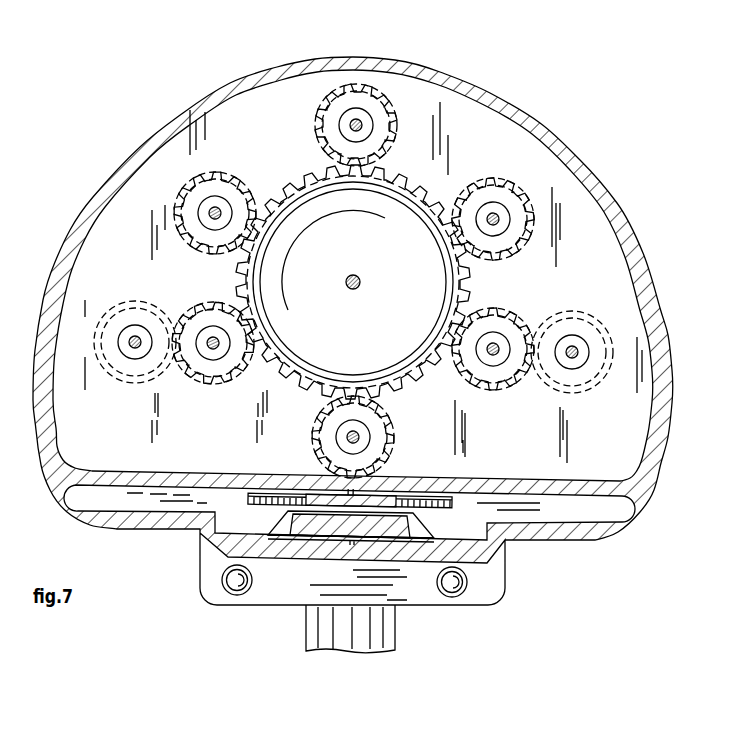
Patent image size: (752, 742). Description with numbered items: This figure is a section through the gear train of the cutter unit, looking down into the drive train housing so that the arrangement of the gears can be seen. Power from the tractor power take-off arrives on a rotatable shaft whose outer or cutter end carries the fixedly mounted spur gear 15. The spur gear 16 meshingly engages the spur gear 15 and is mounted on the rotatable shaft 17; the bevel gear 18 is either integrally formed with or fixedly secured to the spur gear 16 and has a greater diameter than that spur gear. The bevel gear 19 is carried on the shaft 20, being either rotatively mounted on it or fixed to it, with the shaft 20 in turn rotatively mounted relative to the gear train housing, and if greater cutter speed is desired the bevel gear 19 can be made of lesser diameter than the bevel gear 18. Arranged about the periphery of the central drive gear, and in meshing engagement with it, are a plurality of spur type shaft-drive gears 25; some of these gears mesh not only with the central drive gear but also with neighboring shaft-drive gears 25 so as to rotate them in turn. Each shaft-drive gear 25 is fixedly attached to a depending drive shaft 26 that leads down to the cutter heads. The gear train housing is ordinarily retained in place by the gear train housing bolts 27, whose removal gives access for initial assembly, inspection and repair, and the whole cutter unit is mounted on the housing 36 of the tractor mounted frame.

The spur gear 15 is at (457, 500).
The spur gear 16 is at (397, 502).
The rotatable shaft 17 is at (353, 541).
The bevel gear 18 is at (347, 539).
The bevel gear 19 is at (315, 367).
The shaft 20 is at (351, 284).
The shaft-drive gears 25 is at (208, 313).
The drive shaft 26 is at (217, 211).
The gear train housing bolts 27 is at (226, 590).
The housing 36 is at (345, 638).